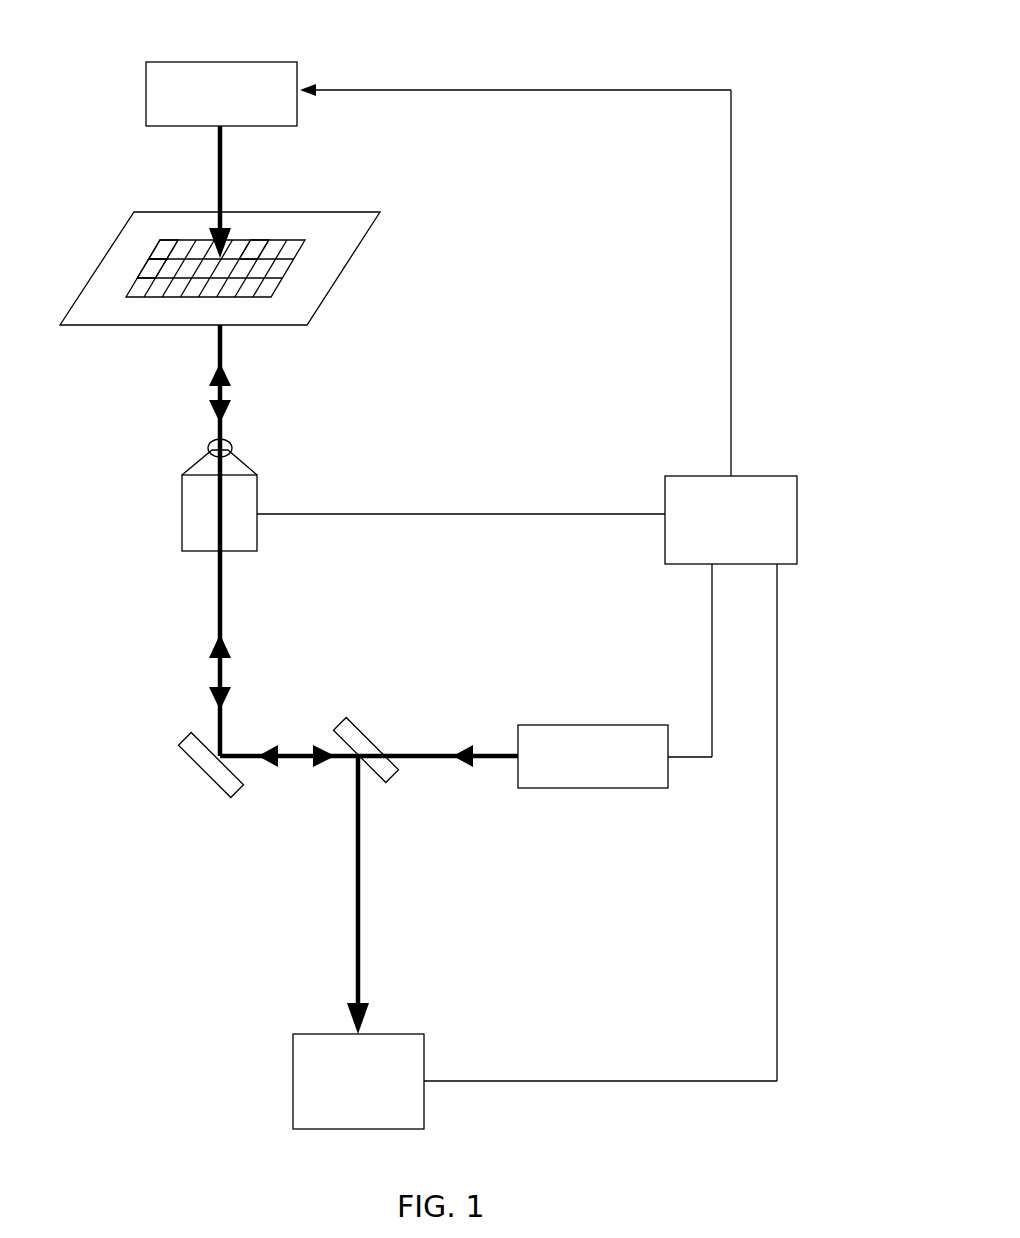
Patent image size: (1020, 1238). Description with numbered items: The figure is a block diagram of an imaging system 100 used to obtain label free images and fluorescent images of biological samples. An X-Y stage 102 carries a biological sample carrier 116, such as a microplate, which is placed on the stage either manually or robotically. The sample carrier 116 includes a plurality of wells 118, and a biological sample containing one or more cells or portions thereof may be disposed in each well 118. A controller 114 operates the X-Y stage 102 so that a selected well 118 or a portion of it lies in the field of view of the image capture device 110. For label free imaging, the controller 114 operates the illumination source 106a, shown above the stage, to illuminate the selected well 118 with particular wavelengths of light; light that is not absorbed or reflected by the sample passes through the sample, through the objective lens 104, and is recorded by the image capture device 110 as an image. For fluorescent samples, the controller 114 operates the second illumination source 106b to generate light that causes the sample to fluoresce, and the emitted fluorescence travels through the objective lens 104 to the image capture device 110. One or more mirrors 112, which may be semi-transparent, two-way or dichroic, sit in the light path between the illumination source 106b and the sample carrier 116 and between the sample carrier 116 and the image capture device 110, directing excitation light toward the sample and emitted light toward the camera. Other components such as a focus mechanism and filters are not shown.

The imaging system 100 is at (822, 128).
The X-Y stage 102 is at (343, 272).
The objective lens 104 is at (199, 489).
The illumination source 106a is at (230, 62).
The illumination source 106b is at (567, 725).
The image capture device 110 is at (293, 1075).
The mirror 112 is at (203, 773).
The controller 114 is at (797, 533).
The biological sample carrier 116 is at (272, 295).
The well 118 is at (257, 252).